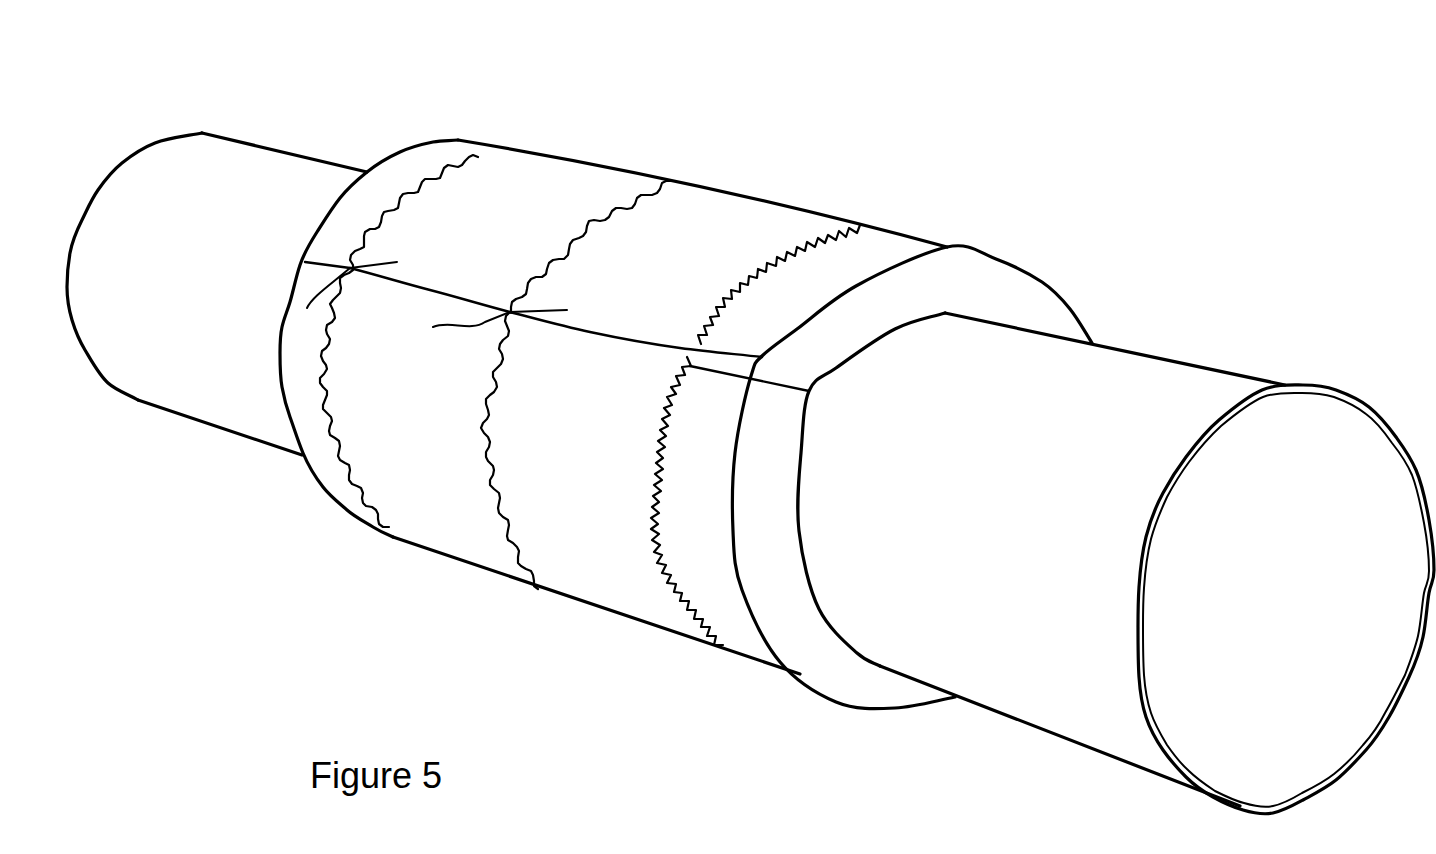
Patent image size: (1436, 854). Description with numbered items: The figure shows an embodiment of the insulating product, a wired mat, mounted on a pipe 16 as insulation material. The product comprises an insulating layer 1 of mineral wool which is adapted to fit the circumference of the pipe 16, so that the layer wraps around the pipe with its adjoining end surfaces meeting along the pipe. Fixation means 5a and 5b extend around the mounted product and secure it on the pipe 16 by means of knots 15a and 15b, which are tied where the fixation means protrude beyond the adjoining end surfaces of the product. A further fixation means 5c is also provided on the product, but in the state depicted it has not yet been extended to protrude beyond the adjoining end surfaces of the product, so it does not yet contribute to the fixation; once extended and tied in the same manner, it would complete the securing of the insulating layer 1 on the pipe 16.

The insulating layer 1 is at (613, 630).
The fixation means 5a is at (515, 133).
The fixation means 5b is at (683, 172).
The fixation means 5c is at (871, 211).
The knot 15a is at (475, 383).
The knot 15b is at (533, 281).
The pipe 16 is at (1276, 363).